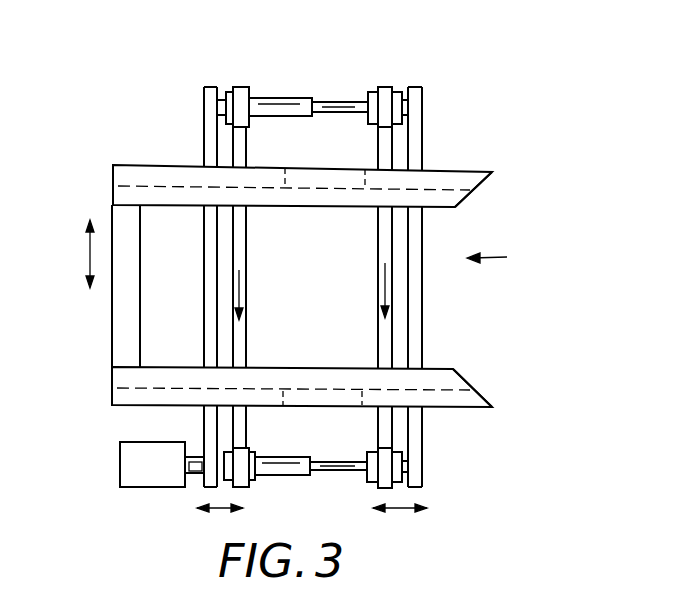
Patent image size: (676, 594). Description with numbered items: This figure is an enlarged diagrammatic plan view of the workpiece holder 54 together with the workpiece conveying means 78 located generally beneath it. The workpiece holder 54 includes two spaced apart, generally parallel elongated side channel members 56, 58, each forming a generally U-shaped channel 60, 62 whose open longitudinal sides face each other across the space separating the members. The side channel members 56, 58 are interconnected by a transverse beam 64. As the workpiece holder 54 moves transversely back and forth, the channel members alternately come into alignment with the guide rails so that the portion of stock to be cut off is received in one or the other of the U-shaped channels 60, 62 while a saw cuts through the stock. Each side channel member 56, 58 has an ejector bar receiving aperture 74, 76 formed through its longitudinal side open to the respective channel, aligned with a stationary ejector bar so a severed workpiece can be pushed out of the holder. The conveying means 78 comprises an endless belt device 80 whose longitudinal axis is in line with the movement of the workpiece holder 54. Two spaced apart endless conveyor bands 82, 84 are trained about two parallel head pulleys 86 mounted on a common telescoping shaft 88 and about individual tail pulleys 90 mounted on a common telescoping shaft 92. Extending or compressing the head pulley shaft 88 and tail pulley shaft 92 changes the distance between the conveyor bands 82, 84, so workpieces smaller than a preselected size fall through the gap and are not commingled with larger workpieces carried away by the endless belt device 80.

The workpiece holder 54 is at (128, 127).
The side channel member 56 is at (173, 166).
The side channel member 58 is at (453, 408).
The U-shaped channel 60 is at (442, 197).
The U-shaped channel 62 is at (448, 380).
The transverse beam 64 is at (123, 323).
The ejector bar receiving aperture 74 is at (332, 168).
The ejector bar receiving aperture 76 is at (352, 408).
The workpiece conveying means 78 is at (504, 259).
The endless belt device 80 is at (400, 308).
The endless conveyor band 82 is at (382, 345).
The endless conveyor band 84 is at (240, 330).
The head pulley 86 is at (250, 481).
The head pulley telescoping shaft 88 is at (313, 470).
The tail pulley 90 is at (254, 93).
The tail pulley telescoping shaft 92 is at (328, 100).